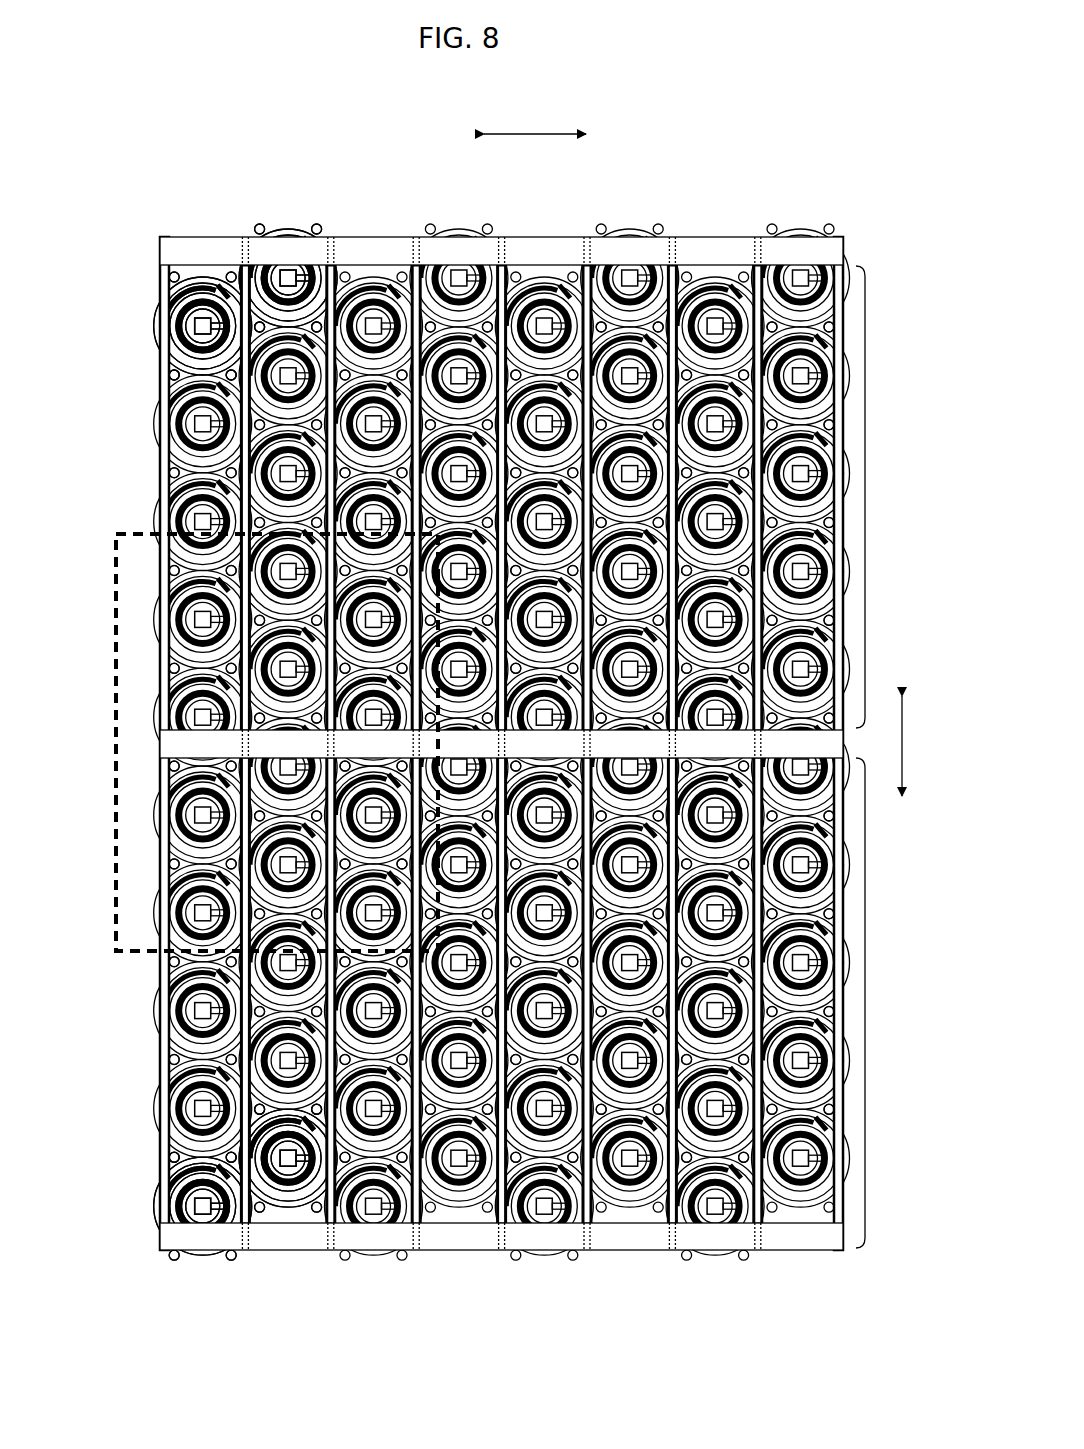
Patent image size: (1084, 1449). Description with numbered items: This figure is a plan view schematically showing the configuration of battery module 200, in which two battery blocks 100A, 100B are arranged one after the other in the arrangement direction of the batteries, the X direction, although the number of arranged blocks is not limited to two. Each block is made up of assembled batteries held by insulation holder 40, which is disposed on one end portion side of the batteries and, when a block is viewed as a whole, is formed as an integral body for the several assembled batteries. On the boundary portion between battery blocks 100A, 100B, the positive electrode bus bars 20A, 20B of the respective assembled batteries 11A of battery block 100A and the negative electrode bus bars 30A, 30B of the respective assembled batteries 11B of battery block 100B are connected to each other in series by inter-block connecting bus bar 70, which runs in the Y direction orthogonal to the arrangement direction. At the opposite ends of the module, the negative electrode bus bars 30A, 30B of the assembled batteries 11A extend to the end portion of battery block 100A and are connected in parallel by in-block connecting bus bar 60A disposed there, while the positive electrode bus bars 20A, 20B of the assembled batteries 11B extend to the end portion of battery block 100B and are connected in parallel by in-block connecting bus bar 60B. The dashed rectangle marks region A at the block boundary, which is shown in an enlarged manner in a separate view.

The battery module 200 is at (806, 143).
The battery block 100A is at (553, 742).
The battery block 100B is at (904, 1003).
The assembled battery 11A is at (200, 268).
The assembled battery 11B is at (285, 220).
The insulation holder 40 is at (150, 320).
The negative electrode bus bar 30A is at (153, 230).
The negative electrode bus bar 30B is at (238, 230).
The positive electrode bus bar 20A is at (321, 1243).
The positive electrode bus bar 20B is at (233, 1243).
The in-block connecting bus bar 60A is at (541, 229).
The in-block connecting bus bar 60B is at (616, 1243).
The inter-block connecting bus bar 70 is at (185, 737).
The region A is at (106, 560).